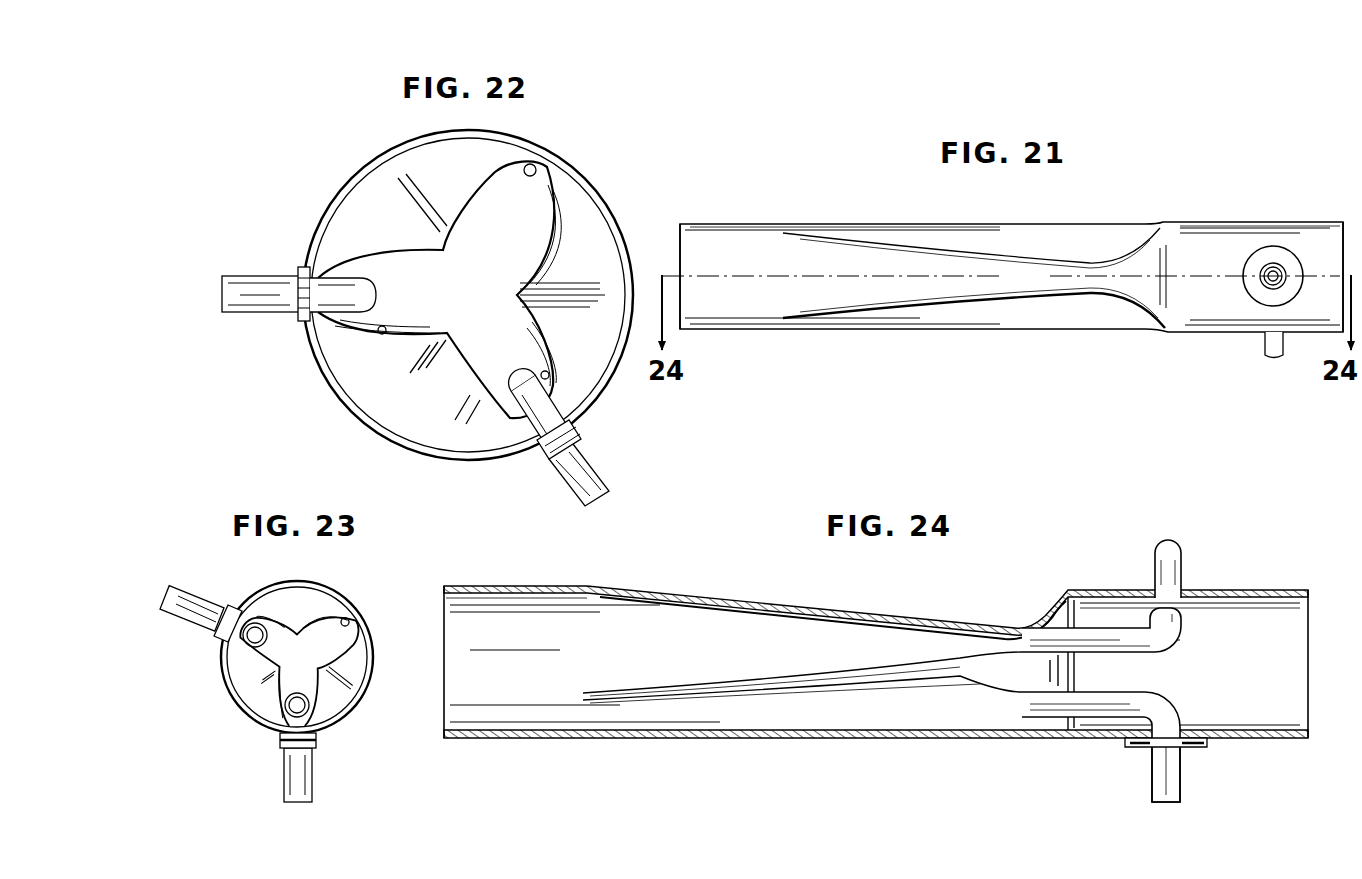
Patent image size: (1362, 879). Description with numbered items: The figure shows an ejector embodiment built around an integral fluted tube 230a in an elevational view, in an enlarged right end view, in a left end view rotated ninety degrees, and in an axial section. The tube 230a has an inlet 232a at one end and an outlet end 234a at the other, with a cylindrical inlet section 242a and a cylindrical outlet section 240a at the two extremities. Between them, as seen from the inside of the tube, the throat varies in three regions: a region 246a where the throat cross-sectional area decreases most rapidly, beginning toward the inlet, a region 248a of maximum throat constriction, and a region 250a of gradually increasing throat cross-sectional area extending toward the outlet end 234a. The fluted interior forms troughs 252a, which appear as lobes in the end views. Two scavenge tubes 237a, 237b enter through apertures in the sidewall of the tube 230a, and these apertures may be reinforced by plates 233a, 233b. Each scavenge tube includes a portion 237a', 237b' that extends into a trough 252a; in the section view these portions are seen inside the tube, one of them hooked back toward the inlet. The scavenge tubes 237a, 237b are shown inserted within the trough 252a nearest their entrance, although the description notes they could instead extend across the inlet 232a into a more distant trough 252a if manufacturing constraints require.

In FIG. 22, the integral tube 230a is at (356, 178).
In FIG. 21, the integral tube 230a is at (1180, 218).
In FIG. 23, the integral tube 230a is at (224, 690).
In FIG. 24, the integral tube 230a is at (690, 588).
In FIG. 21, the inlet 232a is at (1345, 219).
In FIG. 24, the inlet 232a is at (1310, 590).
In FIG. 22, the plate 233a is at (298, 265).
In FIG. 21, the plate 233a is at (1290, 300).
In FIG. 23, the plate 233a is at (318, 747).
In FIG. 24, the plate 233a is at (1130, 746).
In FIG. 22, the plate 233b is at (580, 428).
In FIG. 23, the plate 233b is at (220, 645).
In FIG. 21, the outlet end 234a is at (665, 232).
In FIG. 24, the outlet end 234a is at (448, 738).
In FIG. 22, the scavenge tube 237a is at (229, 315).
In FIG. 21, the scavenge tube 237a is at (1241, 307).
In FIG. 23, the scavenge tube 237a is at (231, 778).
In FIG. 24, the scavenge tube 237a is at (1119, 779).
In FIG. 22, the scavenge tube 237b is at (601, 437).
In FIG. 21, the scavenge tube 237b is at (1231, 374).
In FIG. 23, the scavenge tube 237b is at (176, 575).
In FIG. 24, the scavenge tube 237b is at (1196, 548).
In FIG. 22, the scavenge tube portion 237a' is at (390, 292).
In FIG. 24, the scavenge tube portion 237a' is at (1043, 743).
In FIG. 22, the scavenge tube portion 237b' is at (435, 385).
In FIG. 24, the scavenge tube portion 237b' is at (1034, 635).
In FIG. 21, the outlet section 240a is at (1220, 220).
In FIG. 24, the outlet section 240a is at (1286, 740).
In FIG. 21, the inlet section 242a is at (748, 222).
In FIG. 24, the inlet section 242a is at (496, 585).
In FIG. 22, the region of rapidly decreasing throat area 246a is at (372, 207).
In FIG. 21, the region of rapidly decreasing throat area 246a is at (1140, 303).
In FIG. 24, the region of rapidly decreasing throat area 246a is at (1048, 610).
In FIG. 21, the region of maximum throat constriction 248a is at (1102, 296).
In FIG. 24, the region of maximum throat constriction 248a is at (985, 624).
In FIG. 22, the region of gradually increasing throat area 250a is at (461, 292).
In FIG. 21, the region of gradually increasing throat area 250a is at (908, 242).
In FIG. 23, the region of gradually increasing throat area 250a is at (312, 600).
In FIG. 24, the region of gradually increasing throat area 250a is at (830, 610).
In FIG. 22, the trough 252a is at (540, 165).
In FIG. 21, the trough 252a is at (978, 287).
In FIG. 23, the trough 252a is at (262, 622).
In FIG. 24, the trough 252a is at (888, 600).